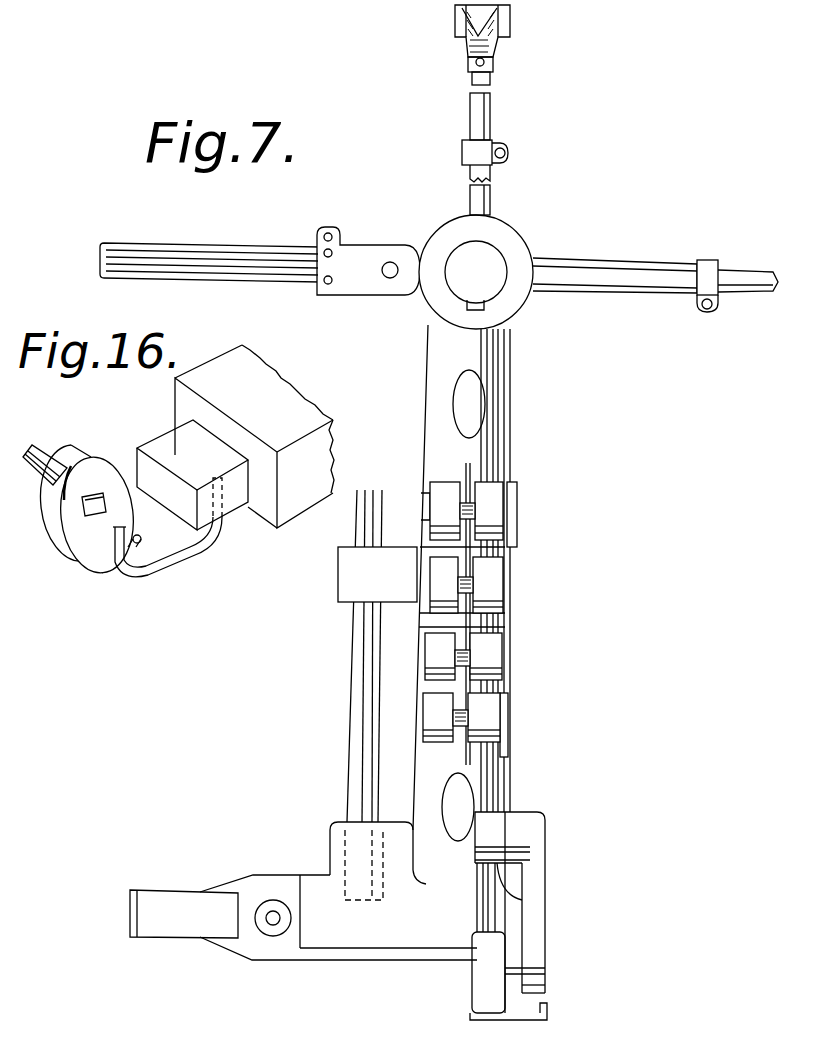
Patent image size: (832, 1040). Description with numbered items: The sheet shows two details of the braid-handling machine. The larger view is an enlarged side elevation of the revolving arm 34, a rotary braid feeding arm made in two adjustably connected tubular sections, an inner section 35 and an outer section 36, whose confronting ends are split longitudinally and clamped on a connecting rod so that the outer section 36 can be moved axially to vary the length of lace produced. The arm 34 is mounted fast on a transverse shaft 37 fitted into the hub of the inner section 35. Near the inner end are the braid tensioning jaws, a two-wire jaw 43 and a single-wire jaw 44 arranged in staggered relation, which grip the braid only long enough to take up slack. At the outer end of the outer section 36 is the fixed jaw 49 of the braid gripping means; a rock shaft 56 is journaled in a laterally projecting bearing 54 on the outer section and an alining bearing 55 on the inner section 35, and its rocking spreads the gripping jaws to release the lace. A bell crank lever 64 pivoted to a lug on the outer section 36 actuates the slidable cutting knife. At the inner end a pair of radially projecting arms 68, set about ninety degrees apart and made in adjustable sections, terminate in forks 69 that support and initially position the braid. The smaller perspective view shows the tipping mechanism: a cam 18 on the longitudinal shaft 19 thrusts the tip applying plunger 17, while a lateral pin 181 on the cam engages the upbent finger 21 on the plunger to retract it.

In FIG. 16, the tip applying plunger 17 is at (168, 448).
In FIG. 16, the cam 18 is at (78, 458).
In FIG. 16, the longitudinal shaft 19 is at (45, 470).
In FIG. 16, the finger 21 is at (168, 567).
In FIG. 16, the lateral pin 181 is at (157, 534).
In FIG. 7, the revolving arm 34 is at (491, 619).
In FIG. 7, the inner section 35 is at (503, 372).
In FIG. 7, the outer section 36 is at (490, 778).
In FIG. 7, the transverse shaft 37 is at (487, 268).
In FIG. 7, the wire jaw 43 is at (296, 282).
In FIG. 7, the wire jaw 44 is at (272, 263).
In FIG. 7, the fixed jaw 49 is at (248, 944).
In FIG. 7, the laterally projecting bearing 54 is at (353, 842).
In FIG. 7, the alining bearing 55 is at (352, 578).
In FIG. 7, the rock shaft 56 is at (375, 690).
In FIG. 7, the bell crank lever 64 is at (530, 912).
In FIG. 7, the radially projecting arms 68 is at (480, 112).
In FIG. 7, the forks 69 is at (508, 15).